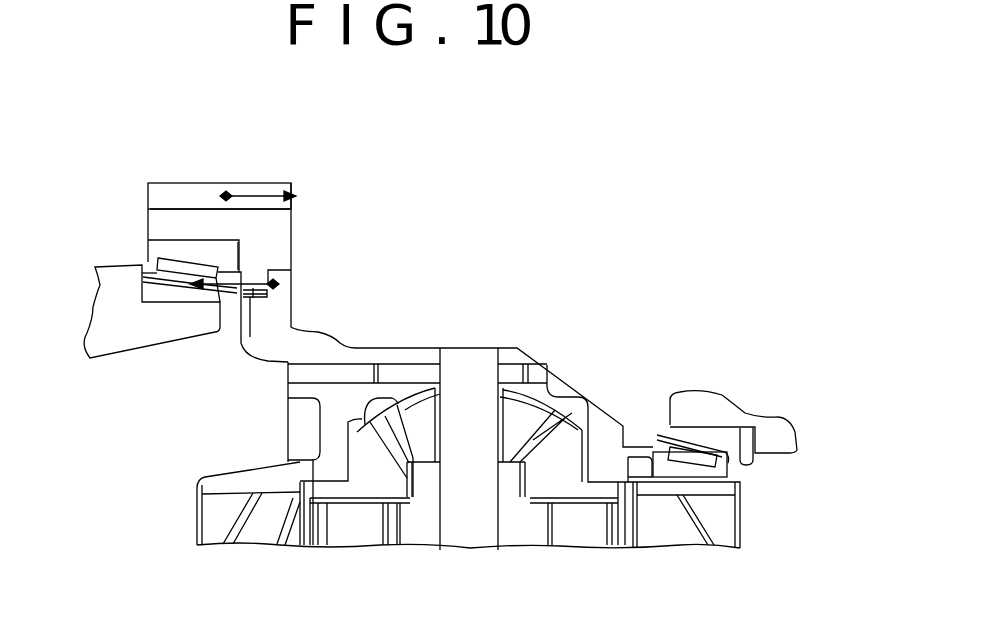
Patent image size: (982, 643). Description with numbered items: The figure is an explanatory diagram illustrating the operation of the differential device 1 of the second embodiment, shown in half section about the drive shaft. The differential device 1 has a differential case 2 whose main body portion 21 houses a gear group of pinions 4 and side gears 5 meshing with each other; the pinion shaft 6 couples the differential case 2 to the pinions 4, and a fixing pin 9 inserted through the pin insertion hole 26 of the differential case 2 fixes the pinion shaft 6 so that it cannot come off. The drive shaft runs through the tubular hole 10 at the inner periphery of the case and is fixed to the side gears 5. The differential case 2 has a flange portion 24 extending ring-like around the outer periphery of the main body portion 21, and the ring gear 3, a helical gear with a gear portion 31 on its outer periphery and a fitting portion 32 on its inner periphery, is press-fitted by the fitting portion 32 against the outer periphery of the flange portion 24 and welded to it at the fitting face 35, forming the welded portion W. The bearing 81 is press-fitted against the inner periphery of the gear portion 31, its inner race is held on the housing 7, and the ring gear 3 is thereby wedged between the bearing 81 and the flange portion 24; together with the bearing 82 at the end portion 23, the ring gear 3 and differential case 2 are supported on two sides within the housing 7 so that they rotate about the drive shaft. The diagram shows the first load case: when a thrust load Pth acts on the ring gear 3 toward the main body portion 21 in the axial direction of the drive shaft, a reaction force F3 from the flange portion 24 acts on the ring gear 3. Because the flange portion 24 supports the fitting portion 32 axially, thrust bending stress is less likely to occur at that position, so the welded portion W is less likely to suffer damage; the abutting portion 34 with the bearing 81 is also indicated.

The differential device 1 is at (722, 303).
The differential case 2 is at (540, 345).
The ring gear 3 is at (152, 172).
The gear portion 31 is at (175, 197).
The abutting portion 34 is at (240, 253).
The fitting face 35 is at (264, 295).
The fitting portion 32 is at (267, 294).
The flange portion 24 is at (293, 283).
The main body portion 21 is at (395, 346).
The pin insertion hole 26 is at (365, 372).
The fixing pin 9 is at (413, 373).
The pinion shaft 6 is at (468, 527).
The pinions 4 is at (423, 433).
The side gears 5 is at (380, 477).
The tubular hole 10 is at (218, 520).
The end portion 23 is at (727, 485).
The housing 7 is at (142, 328).
The bearing 81 is at (142, 247).
The bearing 82 is at (727, 472).
The welded portion W is at (242, 338).
The thrust load Pth is at (253, 188).
The reaction force F3 is at (255, 275).